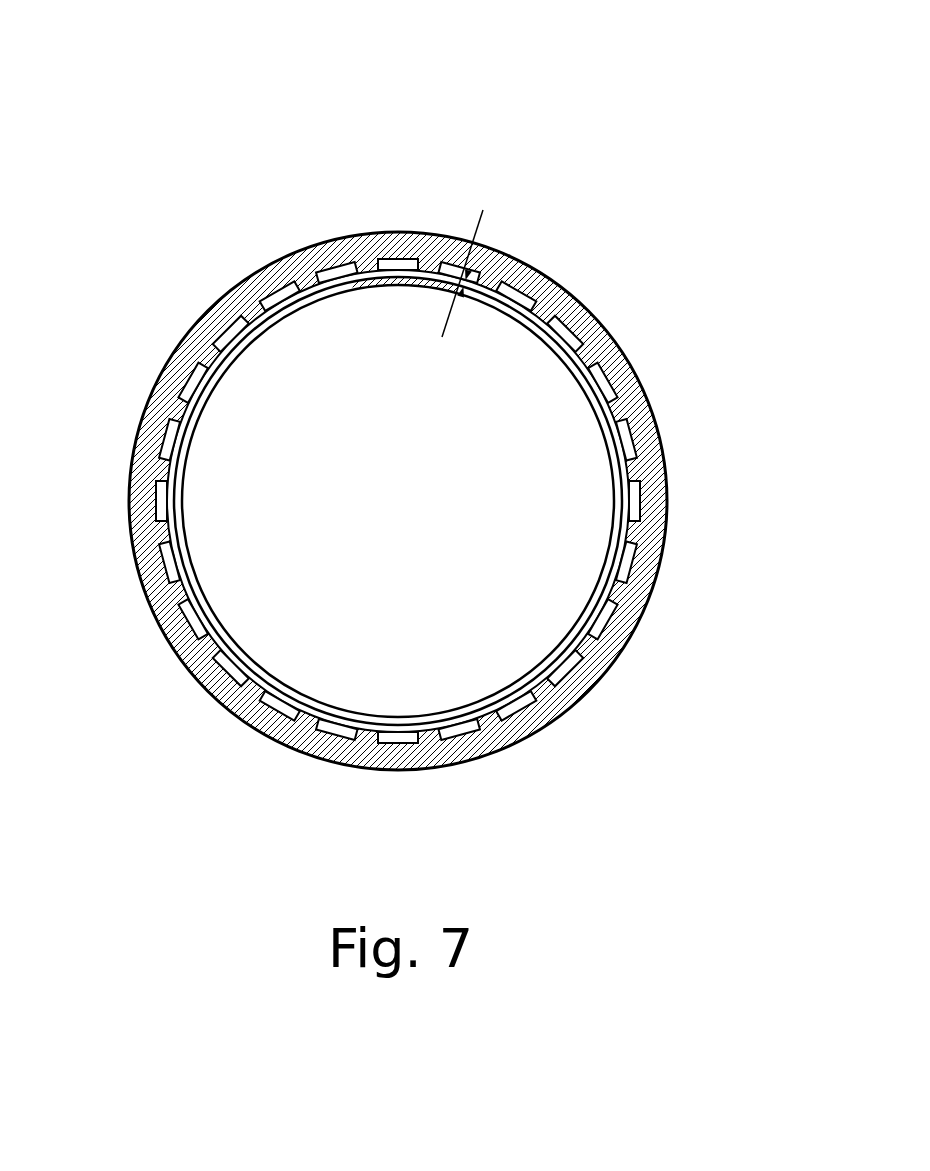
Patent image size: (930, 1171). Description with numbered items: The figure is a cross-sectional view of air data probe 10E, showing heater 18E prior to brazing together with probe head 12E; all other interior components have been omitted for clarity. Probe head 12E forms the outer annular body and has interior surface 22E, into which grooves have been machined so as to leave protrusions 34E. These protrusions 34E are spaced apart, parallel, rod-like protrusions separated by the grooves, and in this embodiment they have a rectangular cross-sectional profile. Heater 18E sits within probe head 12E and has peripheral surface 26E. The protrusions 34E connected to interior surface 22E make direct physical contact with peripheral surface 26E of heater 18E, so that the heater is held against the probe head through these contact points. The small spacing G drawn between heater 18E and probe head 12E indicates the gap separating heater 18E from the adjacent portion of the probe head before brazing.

The air data probe 10E is at (140, 122).
The probe head 12E is at (398, 501).
The heater 18E is at (398, 501).
The interior surface 22E is at (398, 501).
The peripheral surface 26E is at (398, 501).
The protrusions 34E is at (398, 501).
The air gap G is at (462, 277).